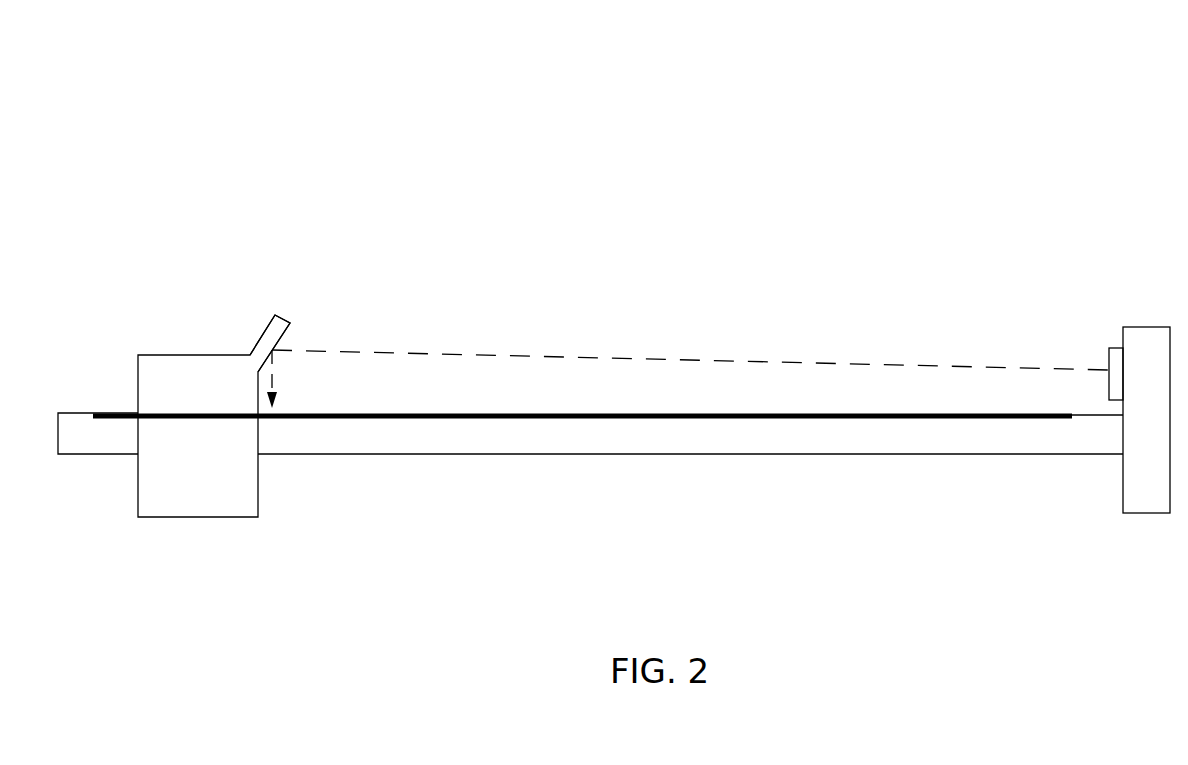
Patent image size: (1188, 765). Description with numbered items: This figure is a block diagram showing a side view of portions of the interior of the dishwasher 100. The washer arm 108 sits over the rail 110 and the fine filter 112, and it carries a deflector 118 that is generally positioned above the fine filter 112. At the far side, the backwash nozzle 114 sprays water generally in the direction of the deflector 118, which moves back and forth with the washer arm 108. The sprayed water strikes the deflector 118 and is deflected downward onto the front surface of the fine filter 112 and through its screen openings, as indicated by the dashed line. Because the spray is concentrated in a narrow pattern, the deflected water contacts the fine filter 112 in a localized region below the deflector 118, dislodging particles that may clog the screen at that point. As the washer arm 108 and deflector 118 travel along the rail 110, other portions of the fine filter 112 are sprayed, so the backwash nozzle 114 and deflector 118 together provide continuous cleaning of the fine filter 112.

The dishwasher 100 is at (656, 86).
The washer arm 108 is at (187, 355).
The rail 110 is at (572, 442).
The fine filter 112 is at (505, 413).
The backwash nozzle 114 is at (1115, 348).
The deflector 118 is at (275, 315).